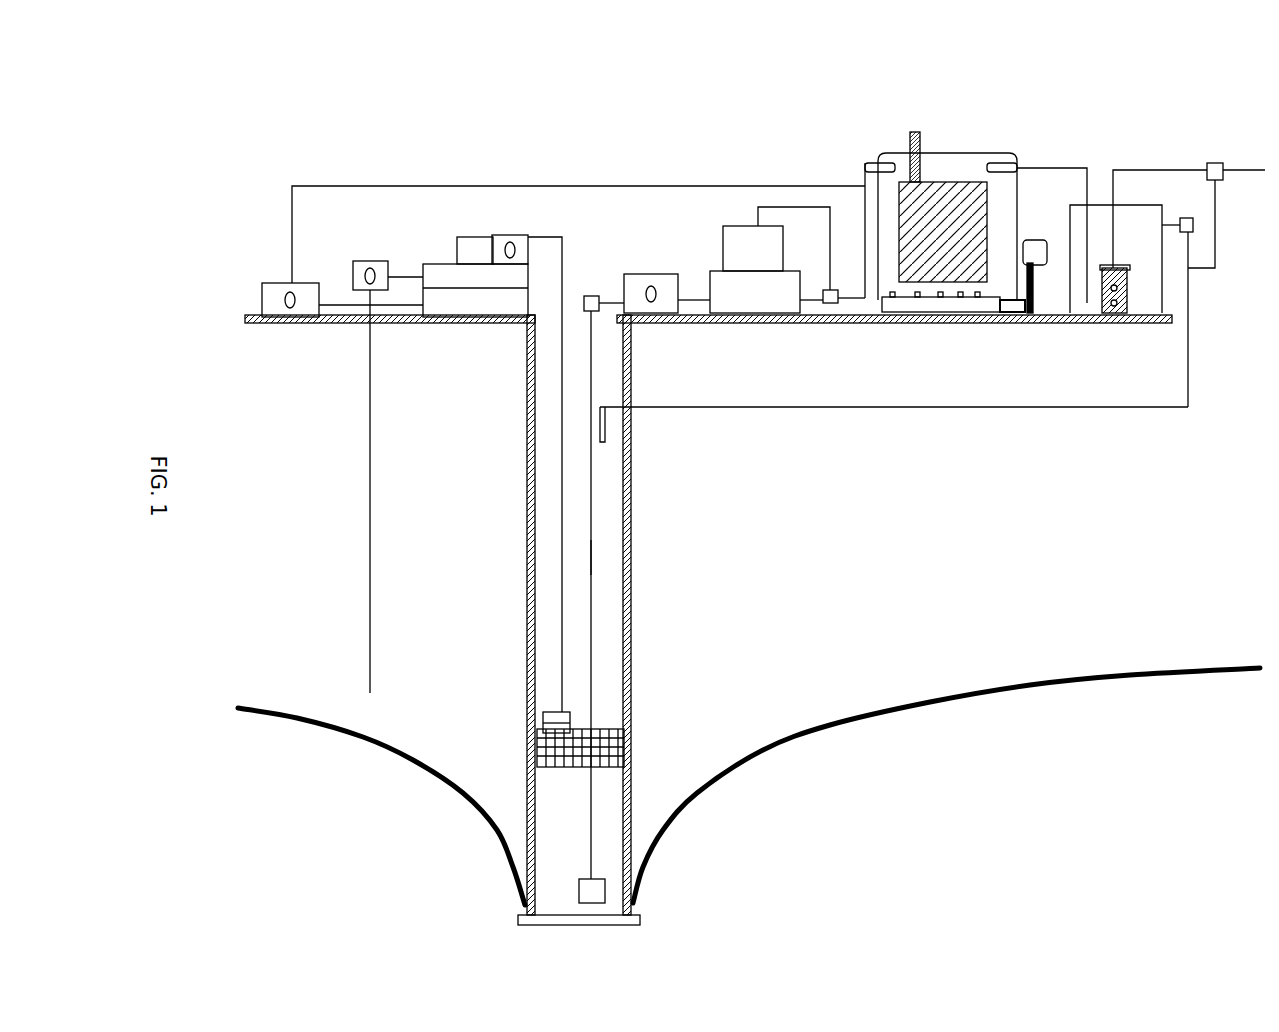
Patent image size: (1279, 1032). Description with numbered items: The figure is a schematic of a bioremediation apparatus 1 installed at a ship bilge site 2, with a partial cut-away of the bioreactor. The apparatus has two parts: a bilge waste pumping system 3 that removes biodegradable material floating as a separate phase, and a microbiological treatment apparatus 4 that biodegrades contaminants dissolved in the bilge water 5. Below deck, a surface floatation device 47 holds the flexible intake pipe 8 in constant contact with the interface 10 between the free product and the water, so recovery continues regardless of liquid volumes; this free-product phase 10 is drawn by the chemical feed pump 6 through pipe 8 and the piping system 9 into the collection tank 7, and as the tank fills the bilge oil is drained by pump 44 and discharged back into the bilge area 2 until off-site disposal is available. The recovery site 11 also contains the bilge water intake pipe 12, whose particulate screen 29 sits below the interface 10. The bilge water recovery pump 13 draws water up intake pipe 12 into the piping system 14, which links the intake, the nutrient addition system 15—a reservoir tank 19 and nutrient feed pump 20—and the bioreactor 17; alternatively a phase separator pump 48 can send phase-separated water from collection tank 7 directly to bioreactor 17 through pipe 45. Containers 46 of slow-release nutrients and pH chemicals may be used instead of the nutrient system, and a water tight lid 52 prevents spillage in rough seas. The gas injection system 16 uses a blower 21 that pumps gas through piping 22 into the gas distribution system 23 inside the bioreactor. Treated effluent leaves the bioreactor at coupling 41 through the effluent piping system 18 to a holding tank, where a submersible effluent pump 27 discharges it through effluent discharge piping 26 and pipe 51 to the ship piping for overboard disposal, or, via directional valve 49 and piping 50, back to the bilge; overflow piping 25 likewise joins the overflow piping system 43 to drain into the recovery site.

The bioremediation apparatus 1 is at (598, 96).
The ship bilge site 2 is at (749, 786).
The bilge waste pumping system 3 is at (708, 256).
The microbiological treatment apparatus 4 is at (947, 190).
The bilge water 5 is at (579, 620).
The chemical feed pump 6 is at (510, 234).
The collection tank 7 is at (475, 277).
The flexible intake pipe 8 is at (545, 607).
The piping system 9 is at (545, 461).
The interface 10 is at (602, 748).
The recovery site 11 is at (604, 595).
The bilge water intake pipe 12 is at (604, 557).
The bilge water recovery pump 13 is at (667, 279).
The intake pipe / piping system 14 is at (602, 291).
The nutrient addition system 15 is at (770, 250).
The gas injection system 16 is at (1012, 326).
The bioreactor 17 is at (943, 220).
The effluent piping system 18 is at (1052, 221).
The reservoir tank 19 is at (766, 292).
The nutrient feed pump 20 is at (753, 248).
The blower 21 is at (1040, 282).
The piping 22 is at (982, 323).
The gas distribution system 23 is at (902, 322).
The overflow piping 25 is at (1180, 210).
The effluent discharge piping 26 is at (1157, 205).
The submersible effluent pump 27 is at (1116, 259).
The particulate screen 29 is at (614, 893).
The coupling 41 is at (1003, 145).
The overflow piping system 43 is at (910, 337).
The pump 44 is at (388, 462).
The pipe 45 is at (593, 226).
The containers 46 is at (908, 143).
The surface floatation device 47 is at (530, 723).
The phase separator pump 48 is at (342, 287).
The directional valve 49 is at (1213, 158).
The piping 50 is at (1219, 224).
The pipe 51 is at (1244, 156).
The water tight lid 52 is at (957, 145).